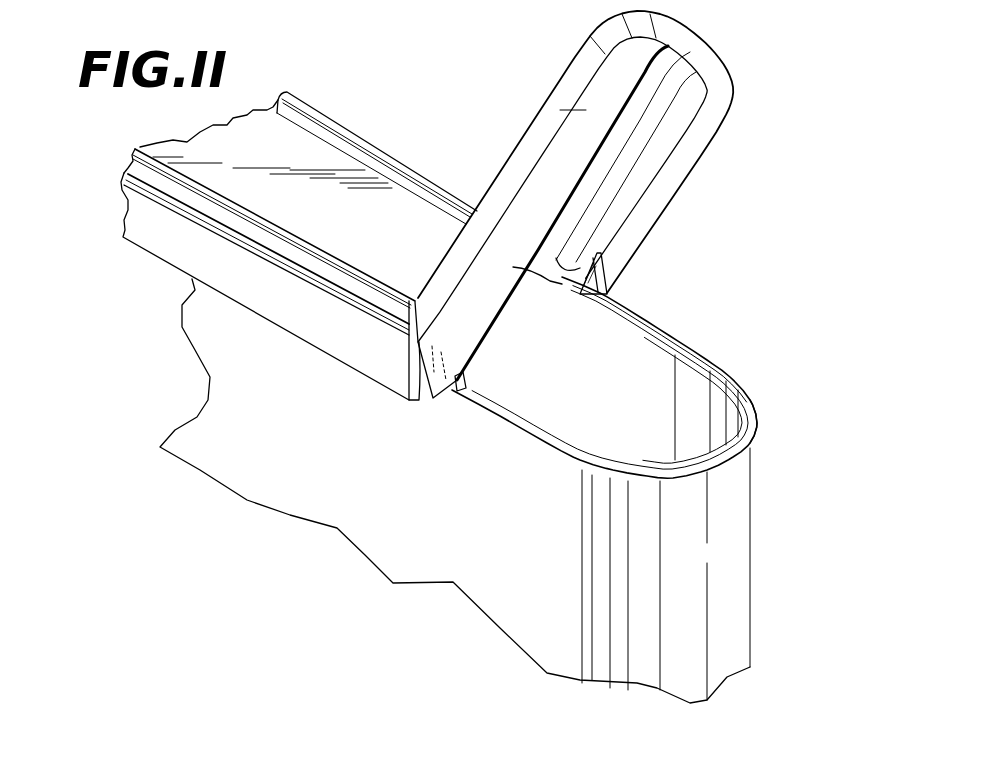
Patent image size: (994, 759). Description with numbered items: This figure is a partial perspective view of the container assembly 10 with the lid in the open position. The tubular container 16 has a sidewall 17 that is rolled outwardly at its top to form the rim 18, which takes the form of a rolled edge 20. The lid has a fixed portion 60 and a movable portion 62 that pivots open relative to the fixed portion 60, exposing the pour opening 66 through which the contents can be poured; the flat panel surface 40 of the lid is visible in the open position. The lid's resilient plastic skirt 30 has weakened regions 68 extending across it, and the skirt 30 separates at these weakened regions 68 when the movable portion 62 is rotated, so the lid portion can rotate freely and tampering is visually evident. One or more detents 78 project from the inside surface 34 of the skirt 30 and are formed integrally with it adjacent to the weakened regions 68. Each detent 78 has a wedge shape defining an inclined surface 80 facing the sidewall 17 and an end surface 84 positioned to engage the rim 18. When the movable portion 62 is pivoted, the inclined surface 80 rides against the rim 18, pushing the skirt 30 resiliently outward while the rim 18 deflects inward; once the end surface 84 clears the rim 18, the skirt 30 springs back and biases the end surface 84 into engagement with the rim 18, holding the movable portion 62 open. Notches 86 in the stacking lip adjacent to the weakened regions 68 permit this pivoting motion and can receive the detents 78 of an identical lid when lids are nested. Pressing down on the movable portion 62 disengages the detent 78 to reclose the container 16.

The container assembly 10 is at (782, 581).
The tubular container 16 is at (528, 565).
The container sidewall 17 is at (628, 404).
The rim 18 is at (713, 363).
The rolled edge 20 is at (750, 437).
The skirt 30 is at (588, 111).
The inside surface 34 is at (690, 133).
The panel surface 40 is at (370, 231).
The fixed portion 60 is at (160, 243).
The movable portion 62 is at (693, 32).
The pour opening 66 is at (690, 427).
The weakened regions 68 is at (420, 398).
The detents 78 is at (605, 285).
The inclined surface 80 is at (577, 285).
The end surface 84 is at (640, 317).
The notches 86 is at (407, 340).